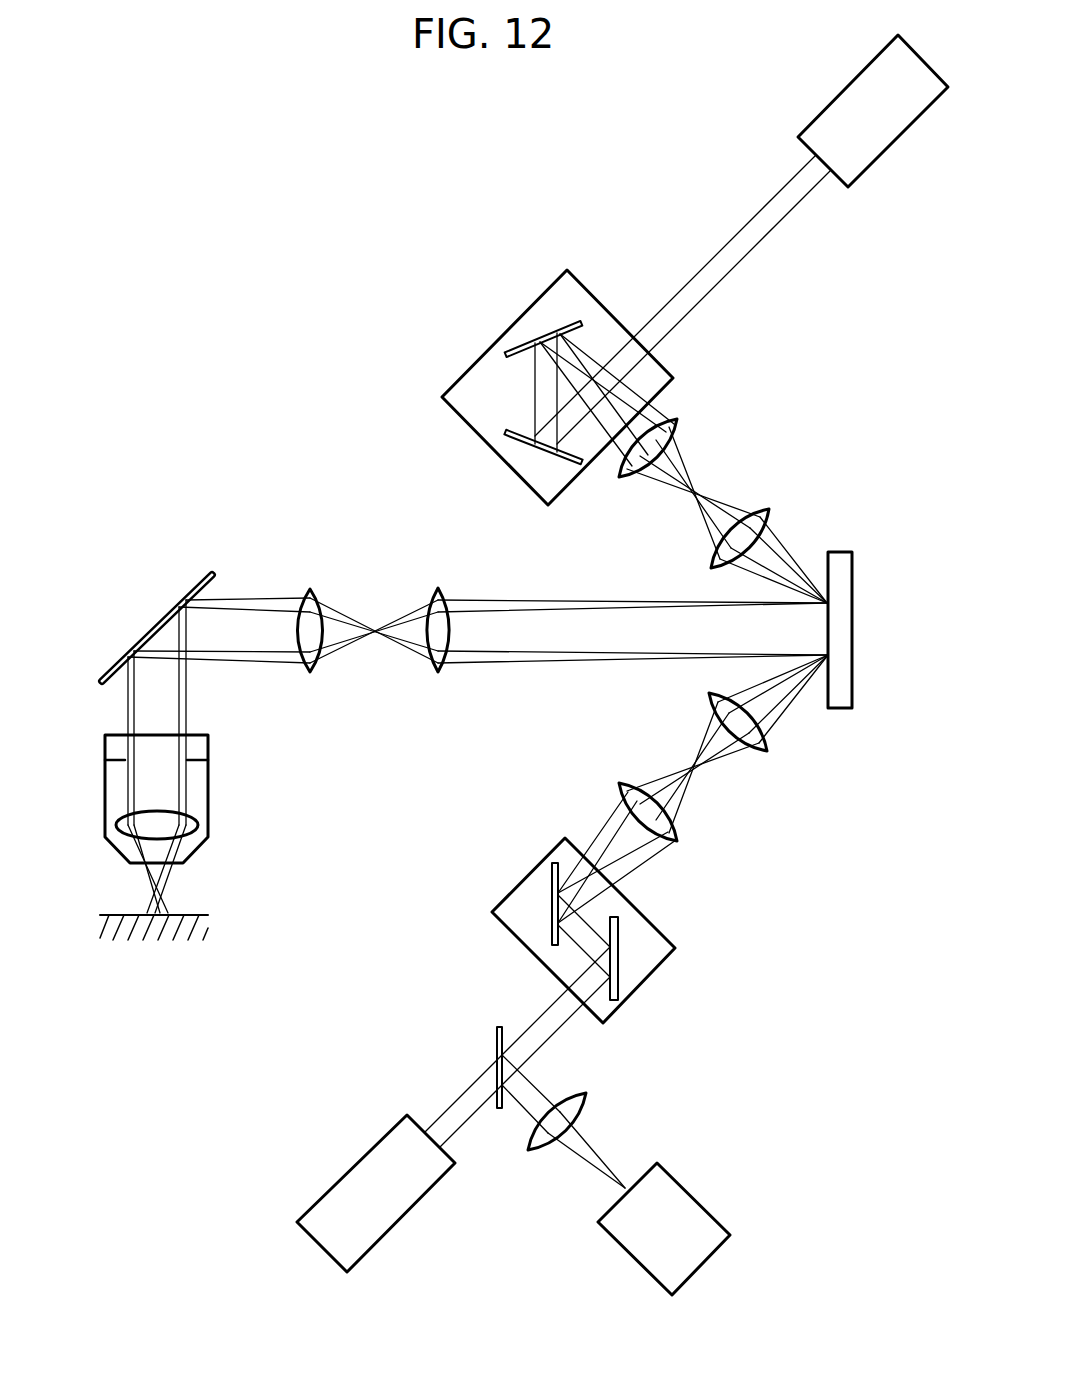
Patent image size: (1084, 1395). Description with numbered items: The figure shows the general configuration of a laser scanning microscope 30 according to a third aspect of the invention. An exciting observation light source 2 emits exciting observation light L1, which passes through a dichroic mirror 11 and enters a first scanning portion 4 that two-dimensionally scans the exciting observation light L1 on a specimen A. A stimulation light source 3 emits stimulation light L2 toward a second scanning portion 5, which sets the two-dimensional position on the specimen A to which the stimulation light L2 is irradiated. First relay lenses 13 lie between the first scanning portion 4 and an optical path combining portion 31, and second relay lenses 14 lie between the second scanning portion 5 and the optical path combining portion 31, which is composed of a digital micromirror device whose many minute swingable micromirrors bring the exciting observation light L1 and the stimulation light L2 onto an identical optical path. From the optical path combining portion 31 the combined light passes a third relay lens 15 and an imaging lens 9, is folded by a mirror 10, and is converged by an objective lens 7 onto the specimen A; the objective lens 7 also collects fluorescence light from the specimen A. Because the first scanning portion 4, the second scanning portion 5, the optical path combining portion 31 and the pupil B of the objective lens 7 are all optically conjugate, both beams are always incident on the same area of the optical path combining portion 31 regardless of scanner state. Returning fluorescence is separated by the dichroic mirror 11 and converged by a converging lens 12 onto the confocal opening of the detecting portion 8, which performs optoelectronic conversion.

The laser scanning microscope 30 is at (267, 141).
The exciting observation light source 2 is at (357, 1160).
The stimulation light source 3 is at (864, 174).
The first scanning portion 4 is at (640, 990).
The second scanning portion 5 is at (589, 283).
The objective lens 7 is at (198, 823).
The detecting portion 8 is at (695, 1197).
The imaging lens 9 is at (310, 589).
The mirror 10 is at (193, 582).
The dichroic mirror 11 is at (495, 1037).
The converging lens 12 is at (588, 1100).
The first relay lenses 13 is at (785, 745).
The second relay lenses 14 is at (792, 500).
The third relay lens 15 is at (438, 588).
The optical path combining portion 31 is at (838, 552).
The specimen A is at (195, 913).
The pupil of the objective lens B is at (228, 760).
The exciting observation light L1 is at (458, 1128).
The stimulation light L2 is at (753, 248).